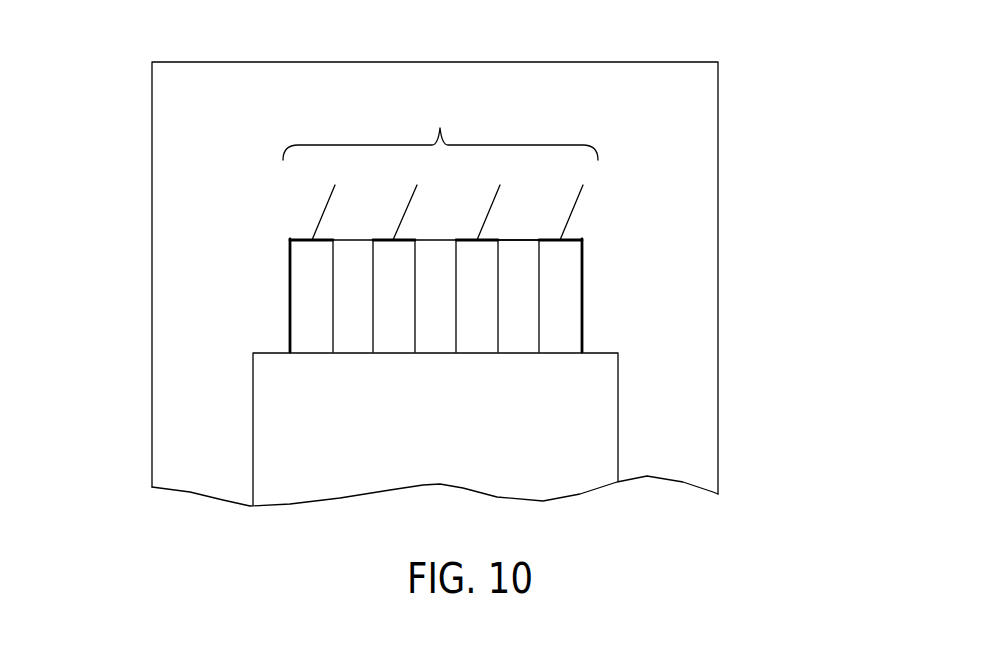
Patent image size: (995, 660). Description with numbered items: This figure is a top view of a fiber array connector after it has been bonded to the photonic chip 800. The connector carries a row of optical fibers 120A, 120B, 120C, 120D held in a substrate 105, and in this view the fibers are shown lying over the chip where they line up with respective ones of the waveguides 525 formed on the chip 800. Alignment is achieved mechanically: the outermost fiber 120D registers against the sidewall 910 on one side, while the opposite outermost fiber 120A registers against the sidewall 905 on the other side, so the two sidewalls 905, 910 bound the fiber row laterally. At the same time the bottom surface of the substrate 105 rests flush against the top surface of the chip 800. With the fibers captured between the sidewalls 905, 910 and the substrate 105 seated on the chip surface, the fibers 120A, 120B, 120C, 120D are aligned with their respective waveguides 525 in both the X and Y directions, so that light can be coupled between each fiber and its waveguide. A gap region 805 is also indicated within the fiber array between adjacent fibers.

The substrate 105 is at (569, 467).
The fiber 120A is at (560, 277).
The fiber 120B is at (473, 327).
The fiber 120C is at (396, 323).
The fiber 120D is at (308, 265).
The waveguides 525 is at (440, 125).
The photonic chip 800 is at (719, 154).
The spacer layer 805 is at (519, 272).
The sidewall 905 is at (600, 327).
The sidewall 910 is at (268, 300).